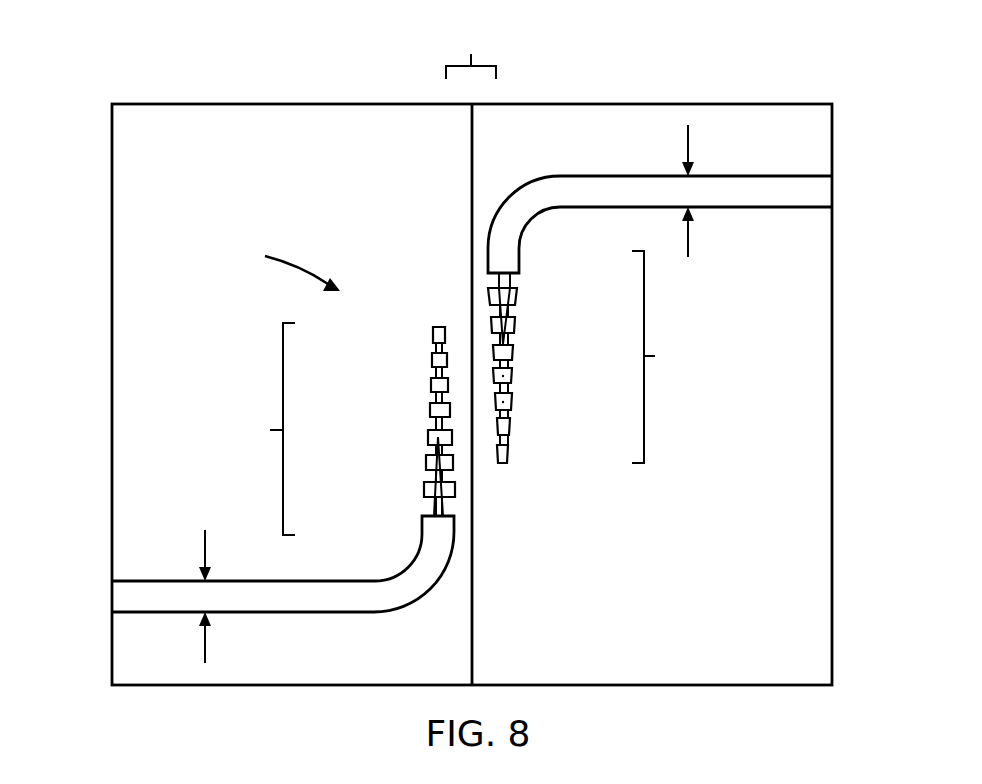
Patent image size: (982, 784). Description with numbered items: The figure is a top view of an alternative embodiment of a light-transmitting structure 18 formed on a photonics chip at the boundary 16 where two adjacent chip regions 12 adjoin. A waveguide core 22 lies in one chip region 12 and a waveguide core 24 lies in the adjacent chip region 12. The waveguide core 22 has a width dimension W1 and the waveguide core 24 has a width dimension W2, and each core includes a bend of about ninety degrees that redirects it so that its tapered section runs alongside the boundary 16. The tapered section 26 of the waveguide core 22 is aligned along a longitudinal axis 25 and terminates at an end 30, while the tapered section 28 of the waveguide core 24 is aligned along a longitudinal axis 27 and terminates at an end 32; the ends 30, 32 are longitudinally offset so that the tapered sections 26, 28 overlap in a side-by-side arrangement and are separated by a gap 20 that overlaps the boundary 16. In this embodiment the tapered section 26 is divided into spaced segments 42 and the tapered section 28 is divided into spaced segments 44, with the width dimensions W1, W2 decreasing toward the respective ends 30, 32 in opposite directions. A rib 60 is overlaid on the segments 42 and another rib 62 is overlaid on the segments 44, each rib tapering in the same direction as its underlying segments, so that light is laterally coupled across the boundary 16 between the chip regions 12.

The chip region 12 is at (160, 248).
The boundary 16 is at (472, 180).
The structure 18 is at (286, 262).
The gap 20 is at (471, 51).
The waveguide core 22 is at (167, 600).
The waveguide core 24 is at (810, 197).
The longitudinal axis 25 is at (432, 412).
The tapered section 26 is at (345, 387).
The longitudinal axis 27 is at (505, 390).
The tapered section 28 is at (590, 410).
The end 30 is at (437, 327).
The end 32 is at (503, 463).
The segments 42 is at (433, 360).
The segments 44 is at (505, 350).
The rib 60 is at (436, 490).
The rib 62 is at (502, 284).
The width dimension W1 is at (184, 590).
The width dimension W2 is at (708, 197).